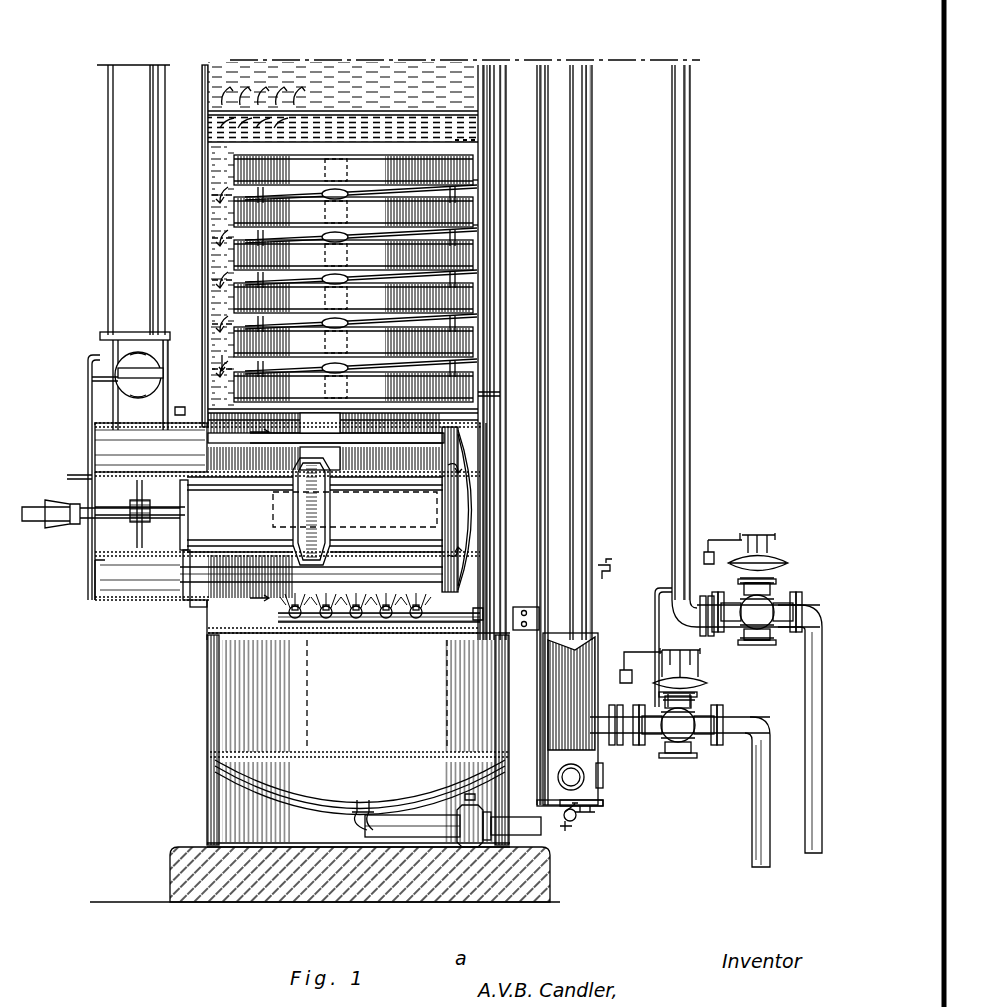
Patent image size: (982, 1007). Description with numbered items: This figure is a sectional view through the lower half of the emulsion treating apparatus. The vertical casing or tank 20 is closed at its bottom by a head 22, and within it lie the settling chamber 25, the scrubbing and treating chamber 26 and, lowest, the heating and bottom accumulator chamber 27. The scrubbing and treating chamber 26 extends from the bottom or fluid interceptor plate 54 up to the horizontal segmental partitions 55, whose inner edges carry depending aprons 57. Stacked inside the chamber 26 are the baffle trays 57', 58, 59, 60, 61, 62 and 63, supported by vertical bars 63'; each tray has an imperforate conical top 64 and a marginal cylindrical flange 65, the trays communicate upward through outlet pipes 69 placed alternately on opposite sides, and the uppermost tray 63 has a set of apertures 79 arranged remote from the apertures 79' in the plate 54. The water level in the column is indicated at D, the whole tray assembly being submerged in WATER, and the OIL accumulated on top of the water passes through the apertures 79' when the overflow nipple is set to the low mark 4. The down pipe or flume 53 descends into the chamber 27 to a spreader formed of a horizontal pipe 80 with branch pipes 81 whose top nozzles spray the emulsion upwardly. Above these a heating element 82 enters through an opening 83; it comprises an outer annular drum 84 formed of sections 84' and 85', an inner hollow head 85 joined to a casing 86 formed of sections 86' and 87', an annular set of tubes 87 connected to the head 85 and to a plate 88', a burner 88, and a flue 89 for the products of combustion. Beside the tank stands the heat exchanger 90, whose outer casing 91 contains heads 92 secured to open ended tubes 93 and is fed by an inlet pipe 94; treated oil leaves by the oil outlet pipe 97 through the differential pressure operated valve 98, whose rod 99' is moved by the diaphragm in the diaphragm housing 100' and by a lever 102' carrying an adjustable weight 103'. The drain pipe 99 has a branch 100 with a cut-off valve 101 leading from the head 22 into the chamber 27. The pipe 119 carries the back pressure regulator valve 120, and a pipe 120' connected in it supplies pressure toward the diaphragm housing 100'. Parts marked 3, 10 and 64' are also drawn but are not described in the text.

The pipe 3 is at (178, 412).
The mark 4 is at (259, 518).
The level indicator 10 is at (225, 365).
The vertical casing or tank 20 is at (492, 242).
The bottom head 22 is at (262, 790).
The settling chamber 25 is at (428, 66).
The scrubbing and treating chamber 26 is at (470, 143).
The heating and bottom accumulator chamber 27 is at (462, 604).
The vertical down pipe or flume 53 is at (490, 498).
The bottom 54 is at (343, 98).
The horizontal segmental partitions 55 is at (503, 408).
The depending aprons 57 is at (372, 440).
The lowermost baffle tray 57' is at (509, 392).
The baffle tray 58 is at (478, 372).
The baffle tray 59 is at (478, 333).
The baffle tray 60 is at (510, 297).
The baffle tray 61 is at (478, 222).
The baffle tray 62 is at (478, 196).
The uppermost baffle tray 63 is at (374, 196).
The vertical bars 63' is at (353, 172).
The imperforate top 64 is at (344, 262).
The tray section 64' is at (343, 420).
The marginal cylindrical flange 65 is at (232, 168).
The outlet pipe 69 is at (345, 193).
The set of apertures 79 is at (343, 114).
The apertures 79' is at (286, 92).
The horizontal pipe 80 is at (427, 628).
The horizontal branch pipes 81 is at (345, 628).
The heating element 82 is at (140, 610).
The opening 83 is at (200, 610).
The outer annular drum 84 is at (132, 590).
The drum section 84' is at (260, 571).
The inner hollow head or shell 85 is at (490, 509).
The drum section 85' is at (158, 385).
The casing 86 is at (358, 514).
The casing section 86' is at (101, 528).
The annular set of tubes 87 is at (332, 506).
The casing section 87' is at (311, 557).
The burner 88 is at (287, 536).
The plate 88' is at (287, 447).
The flue 89 is at (125, 268).
The heat exchanger 90 is at (585, 454).
The outer vertical casing 91 is at (578, 510).
The heads 92 is at (585, 773).
The open ended tubes 93 is at (590, 655).
The inlet pipe 94 is at (590, 812).
The oil outlet pipe 97 is at (750, 768).
The differential pressure operated valve 98 is at (710, 713).
The drain pipe 99 is at (578, 822).
The rod 99' is at (673, 656).
The branch pipe 100 is at (378, 818).
The diaphragm housing 100' is at (650, 697).
The cut-off valve 101 is at (545, 840).
The lever 102' is at (747, 632).
The weight 103' is at (763, 649).
The pipe 119 is at (690, 316).
The back pressure regulator valve 120 is at (759, 693).
The pipe 120' is at (640, 646).
The water level D is at (282, 108).
The oil label OIL is at (206, 129).
The water label WATER is at (222, 230).